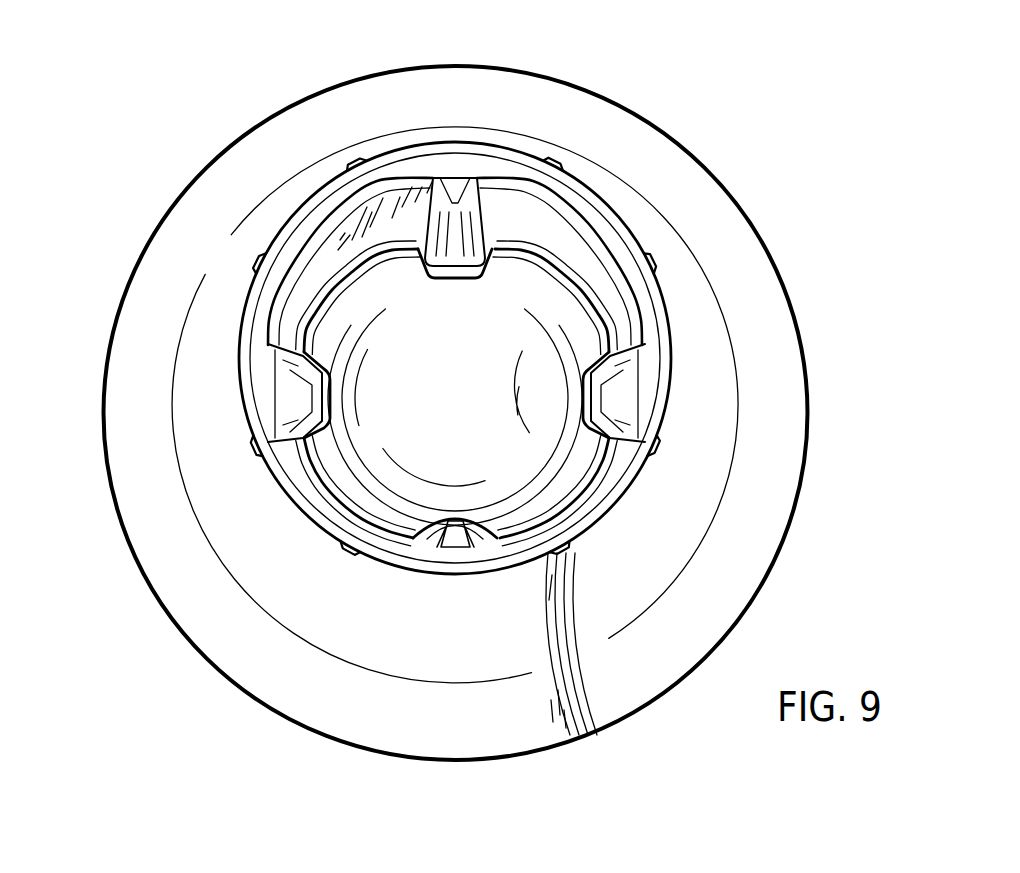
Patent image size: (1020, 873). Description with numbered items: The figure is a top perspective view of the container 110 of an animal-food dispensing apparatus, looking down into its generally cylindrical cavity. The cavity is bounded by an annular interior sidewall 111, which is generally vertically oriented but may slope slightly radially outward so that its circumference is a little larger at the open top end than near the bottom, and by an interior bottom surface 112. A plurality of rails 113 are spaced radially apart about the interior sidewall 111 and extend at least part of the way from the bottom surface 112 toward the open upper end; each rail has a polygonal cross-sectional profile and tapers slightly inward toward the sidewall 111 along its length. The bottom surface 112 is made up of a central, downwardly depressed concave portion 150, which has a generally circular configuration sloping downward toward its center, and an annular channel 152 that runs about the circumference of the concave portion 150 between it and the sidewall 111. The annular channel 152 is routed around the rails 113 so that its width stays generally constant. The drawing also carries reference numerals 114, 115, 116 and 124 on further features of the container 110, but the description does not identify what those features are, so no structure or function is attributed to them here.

The container 110 is at (753, 220).
The interior sidewall 111 is at (577, 237).
The interior bottom surface 112 is at (572, 306).
The rails 113 is at (455, 200).
The collar notches 114 is at (648, 457).
The outer flange 115 is at (782, 542).
The tear strip 116 is at (641, 568).
The cap top 124 is at (446, 6).
The concave portion 150 is at (458, 376).
The annular channel 152 is at (362, 265).